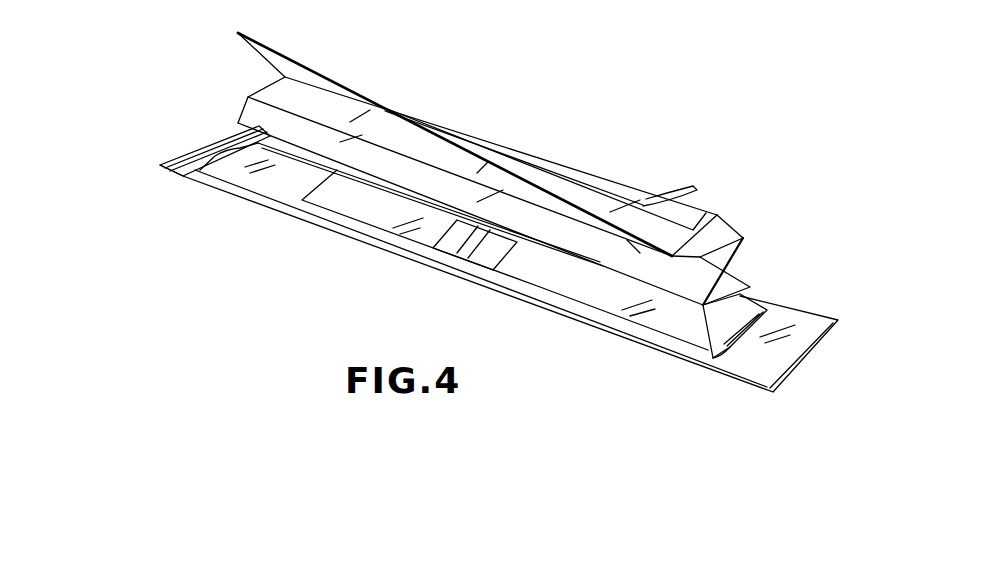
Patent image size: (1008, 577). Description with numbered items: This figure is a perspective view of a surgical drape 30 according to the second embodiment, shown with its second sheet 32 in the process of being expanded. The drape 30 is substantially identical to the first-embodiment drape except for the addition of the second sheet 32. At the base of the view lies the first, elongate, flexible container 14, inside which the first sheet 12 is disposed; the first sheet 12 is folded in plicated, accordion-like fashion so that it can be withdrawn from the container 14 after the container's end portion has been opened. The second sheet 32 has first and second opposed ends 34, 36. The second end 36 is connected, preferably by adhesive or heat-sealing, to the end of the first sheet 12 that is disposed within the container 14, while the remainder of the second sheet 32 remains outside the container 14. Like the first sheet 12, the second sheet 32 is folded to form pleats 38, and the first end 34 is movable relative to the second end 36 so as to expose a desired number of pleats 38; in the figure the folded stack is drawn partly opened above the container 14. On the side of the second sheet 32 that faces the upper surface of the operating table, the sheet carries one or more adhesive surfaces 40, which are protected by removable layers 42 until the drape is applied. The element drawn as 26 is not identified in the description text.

The first sheet 12 is at (349, 206).
The first, elongate, flexible container 14 is at (178, 166).
The card 26 is at (452, 243).
The surgical drape 30 is at (538, 113).
The second sheet 32 is at (766, 229).
The first end 34 is at (707, 189).
The second end 36 is at (738, 357).
The pleats 38 is at (739, 257).
The adhesive surfaces 40 is at (690, 223).
The removable layers 42 is at (683, 190).